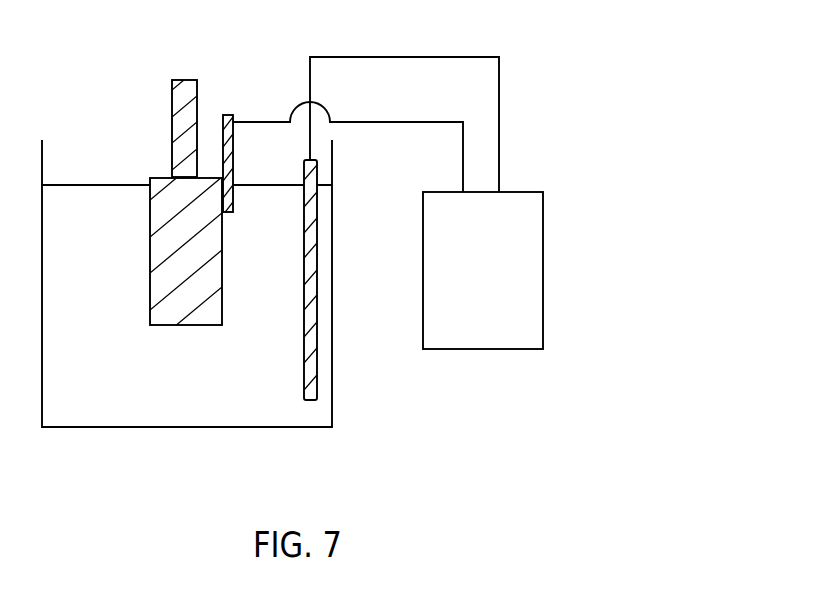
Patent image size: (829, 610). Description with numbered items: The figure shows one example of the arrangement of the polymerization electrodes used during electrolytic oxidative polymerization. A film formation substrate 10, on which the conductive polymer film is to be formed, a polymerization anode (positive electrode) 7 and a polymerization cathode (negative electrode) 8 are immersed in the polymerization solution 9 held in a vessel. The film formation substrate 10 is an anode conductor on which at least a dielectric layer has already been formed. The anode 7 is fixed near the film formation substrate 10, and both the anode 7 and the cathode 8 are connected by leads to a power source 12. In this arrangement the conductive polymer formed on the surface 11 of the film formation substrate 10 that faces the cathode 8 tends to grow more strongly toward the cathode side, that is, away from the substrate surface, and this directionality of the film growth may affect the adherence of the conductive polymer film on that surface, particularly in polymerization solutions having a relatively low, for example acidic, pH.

The polymerization anode 7 is at (233, 118).
The polymerization cathode 8 is at (312, 355).
The polymerization solution 9 is at (310, 413).
The film formation substrate 10 is at (185, 90).
The surface of the film formation substrate 11 is at (185, 307).
The power source 12 is at (525, 272).